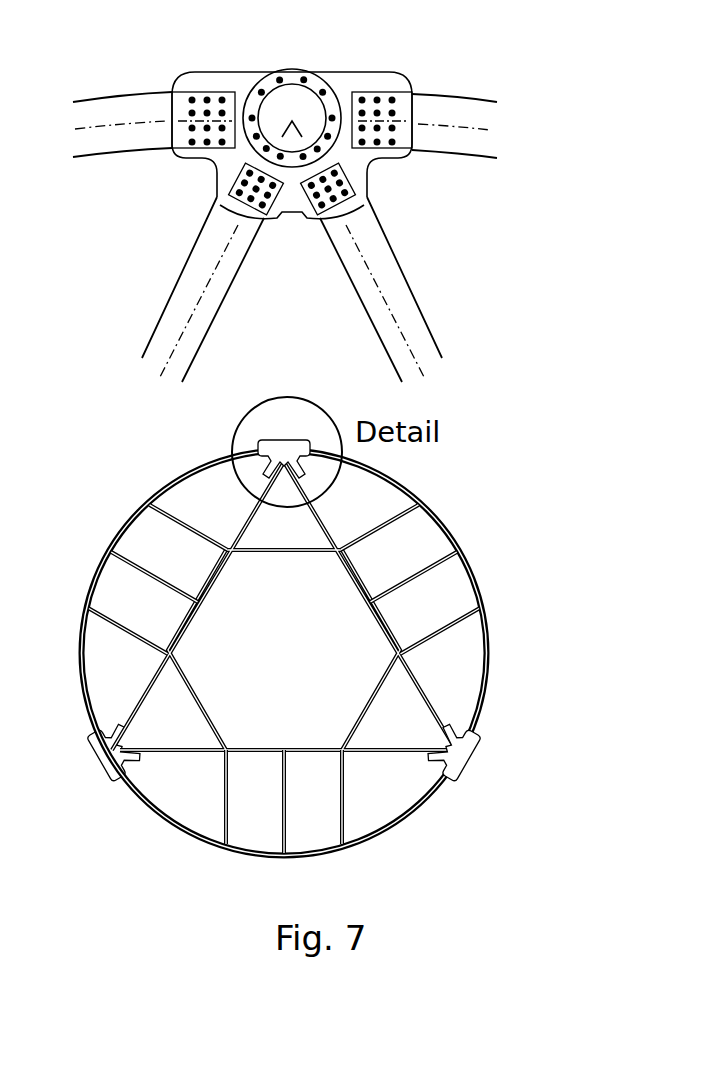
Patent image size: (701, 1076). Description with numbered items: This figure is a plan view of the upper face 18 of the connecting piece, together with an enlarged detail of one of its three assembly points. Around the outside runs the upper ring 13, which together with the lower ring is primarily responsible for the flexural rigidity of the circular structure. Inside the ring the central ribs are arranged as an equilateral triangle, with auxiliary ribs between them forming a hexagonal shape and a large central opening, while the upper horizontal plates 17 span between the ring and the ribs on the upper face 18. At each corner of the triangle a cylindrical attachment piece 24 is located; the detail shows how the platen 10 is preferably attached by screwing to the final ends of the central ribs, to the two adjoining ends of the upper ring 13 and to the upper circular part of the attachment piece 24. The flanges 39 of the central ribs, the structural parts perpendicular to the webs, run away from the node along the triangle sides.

The platen 10 is at (355, 78).
The upper ring 13 is at (480, 143).
The upper horizontal plates 17 is at (458, 685).
The upper face 18 is at (487, 708).
The cylindrical attachment piece 24 is at (280, 100).
The flanges 39 is at (167, 338).